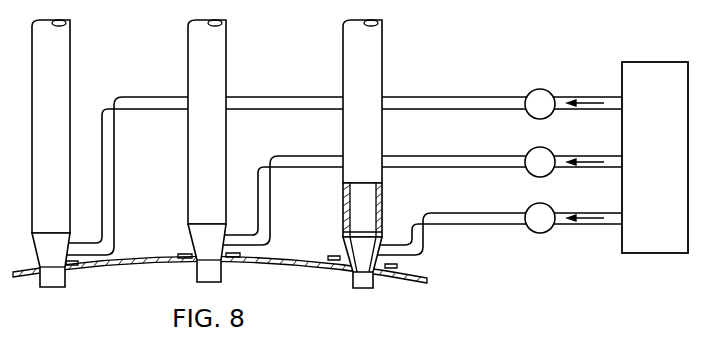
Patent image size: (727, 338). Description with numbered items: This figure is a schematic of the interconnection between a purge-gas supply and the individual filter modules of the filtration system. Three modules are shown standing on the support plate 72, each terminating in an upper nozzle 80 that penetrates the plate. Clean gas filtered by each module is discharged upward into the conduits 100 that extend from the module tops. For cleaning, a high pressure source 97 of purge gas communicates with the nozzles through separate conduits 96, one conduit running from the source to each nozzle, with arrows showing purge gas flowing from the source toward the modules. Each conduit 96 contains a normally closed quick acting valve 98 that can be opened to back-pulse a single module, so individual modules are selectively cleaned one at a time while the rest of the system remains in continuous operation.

The support plate 72 is at (401, 280).
The upper nozzle 80 is at (193, 240).
The conduit 96 is at (443, 110).
The high pressure source 97 is at (653, 254).
The quick acting valve 98 is at (529, 91).
The conduit 100 is at (70, 72).